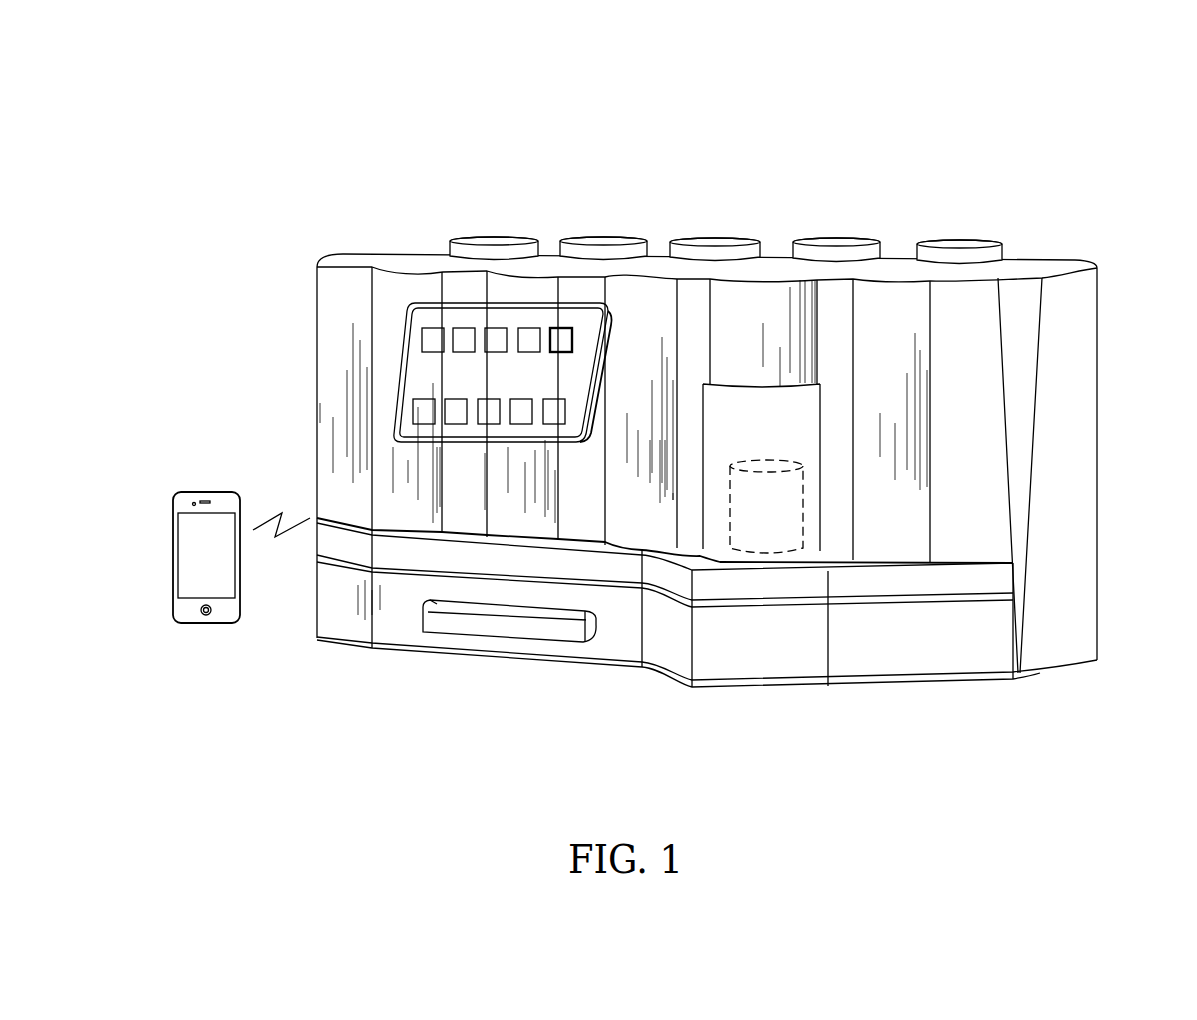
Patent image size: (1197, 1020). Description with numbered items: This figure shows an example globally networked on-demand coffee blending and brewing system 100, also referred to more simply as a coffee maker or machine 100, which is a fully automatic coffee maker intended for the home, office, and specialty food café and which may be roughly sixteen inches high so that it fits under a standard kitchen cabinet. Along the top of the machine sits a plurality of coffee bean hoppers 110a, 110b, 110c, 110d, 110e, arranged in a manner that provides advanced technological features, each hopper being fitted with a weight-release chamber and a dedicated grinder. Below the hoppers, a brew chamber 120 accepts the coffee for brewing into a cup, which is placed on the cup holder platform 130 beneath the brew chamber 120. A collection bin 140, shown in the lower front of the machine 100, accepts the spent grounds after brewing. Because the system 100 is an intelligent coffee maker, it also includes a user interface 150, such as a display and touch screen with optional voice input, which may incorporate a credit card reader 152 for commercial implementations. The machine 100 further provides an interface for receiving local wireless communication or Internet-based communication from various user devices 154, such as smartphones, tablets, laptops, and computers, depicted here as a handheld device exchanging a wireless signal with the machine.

The globally networked on-demand coffee blending and brewing system 100 is at (1107, 104).
The coffee bean hopper 110a is at (493, 231).
The coffee bean hopper 110b is at (605, 231).
The coffee bean hopper 110c is at (719, 231).
The coffee bean hopper 110d is at (839, 231).
The coffee bean hopper 110e is at (961, 234).
The brew chamber 120 is at (776, 338).
The cup holder platform 130 is at (740, 568).
The collection bin 140 is at (475, 643).
The user interface 150 is at (421, 383).
The credit card reader 152 is at (402, 321).
The user device 154 is at (194, 488).